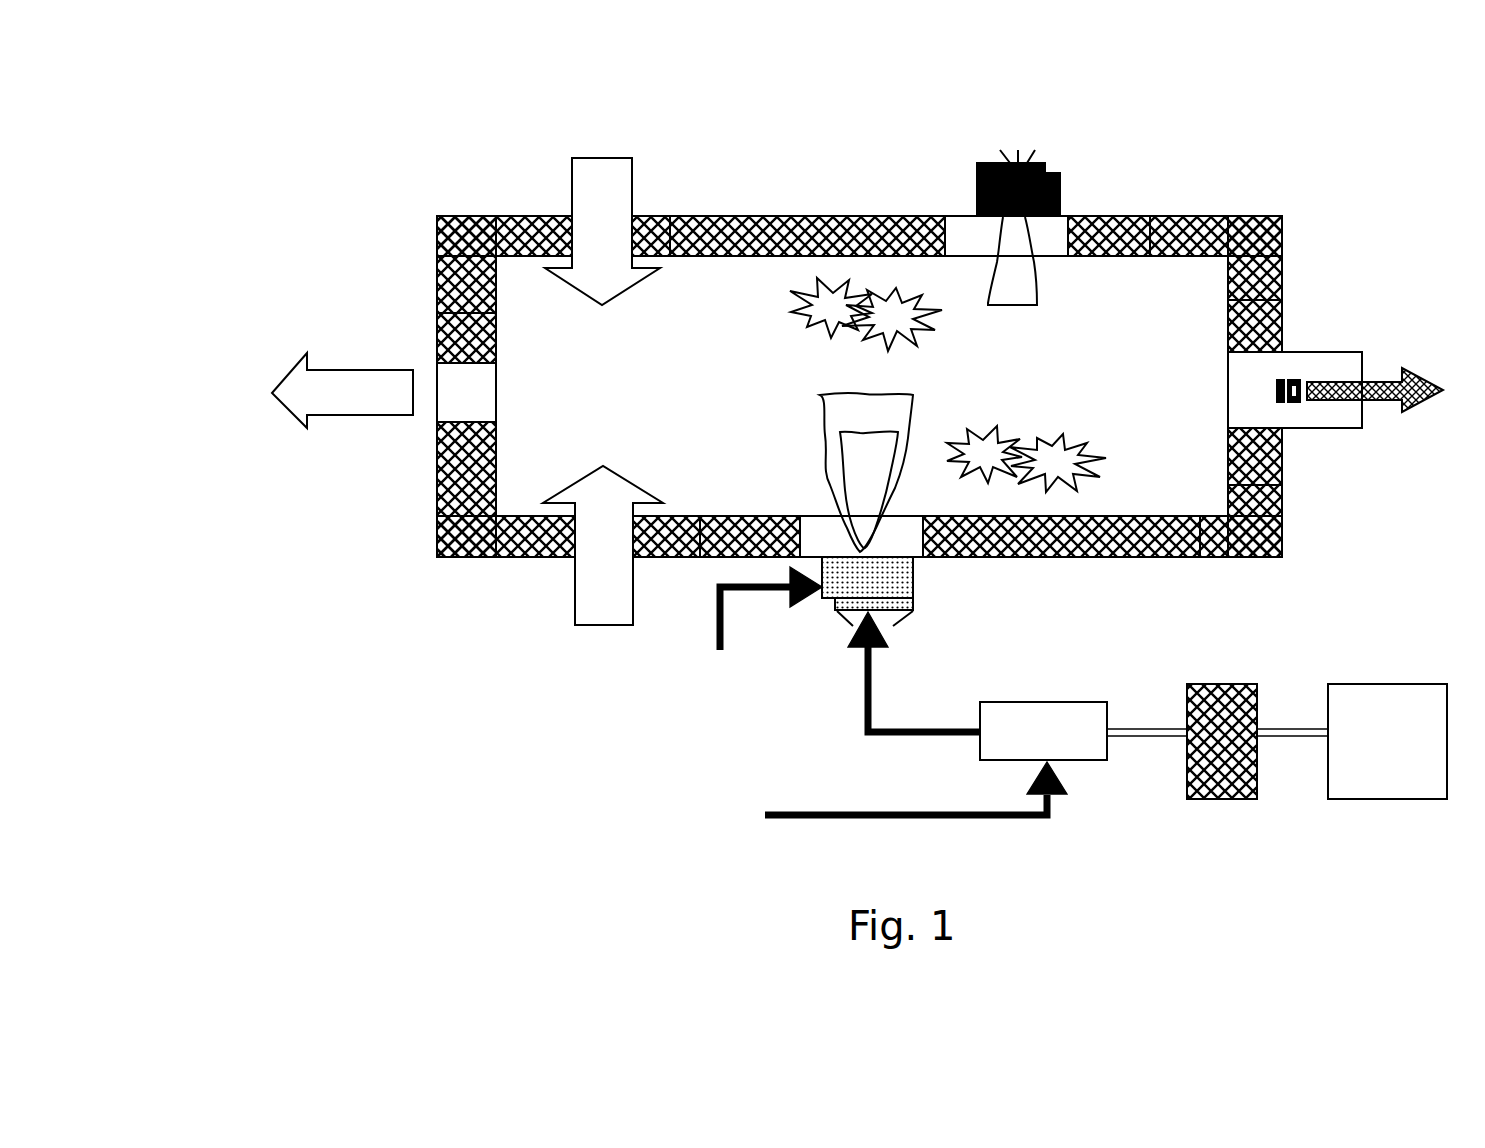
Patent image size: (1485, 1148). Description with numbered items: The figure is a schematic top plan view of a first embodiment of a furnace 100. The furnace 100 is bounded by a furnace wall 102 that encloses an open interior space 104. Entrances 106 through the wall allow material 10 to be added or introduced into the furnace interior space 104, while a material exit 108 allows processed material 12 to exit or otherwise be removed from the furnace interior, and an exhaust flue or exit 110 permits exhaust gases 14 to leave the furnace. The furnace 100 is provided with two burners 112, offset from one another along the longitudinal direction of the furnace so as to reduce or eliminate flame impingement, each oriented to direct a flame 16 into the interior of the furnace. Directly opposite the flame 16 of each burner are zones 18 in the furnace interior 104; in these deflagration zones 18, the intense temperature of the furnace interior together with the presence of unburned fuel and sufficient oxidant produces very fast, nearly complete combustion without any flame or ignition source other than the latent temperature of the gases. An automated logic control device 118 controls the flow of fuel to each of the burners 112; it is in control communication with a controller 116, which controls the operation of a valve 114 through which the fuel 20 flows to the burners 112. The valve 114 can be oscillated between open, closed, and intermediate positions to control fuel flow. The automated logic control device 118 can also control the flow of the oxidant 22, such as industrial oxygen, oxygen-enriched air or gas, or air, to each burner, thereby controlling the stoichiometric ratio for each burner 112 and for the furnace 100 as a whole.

The material 10 is at (585, 178).
The processed material 12 is at (1417, 411).
The exhaust gases 14 is at (327, 380).
The flame 16 is at (1025, 278).
The deflagration zones 18 is at (778, 336).
The fuel 20 is at (896, 728).
The oxidant 22 is at (717, 630).
The furnace 100 is at (825, 384).
The furnace wall 102 is at (838, 216).
The open interior space 104 is at (697, 285).
The entrances 106 is at (560, 212).
The material exit 108 is at (1322, 352).
The exhaust flue 110 is at (452, 407).
The burners 112 is at (1060, 196).
The valve 114 is at (1083, 750).
The controller 116 is at (1258, 787).
The automated logic control device 118 is at (1357, 690).